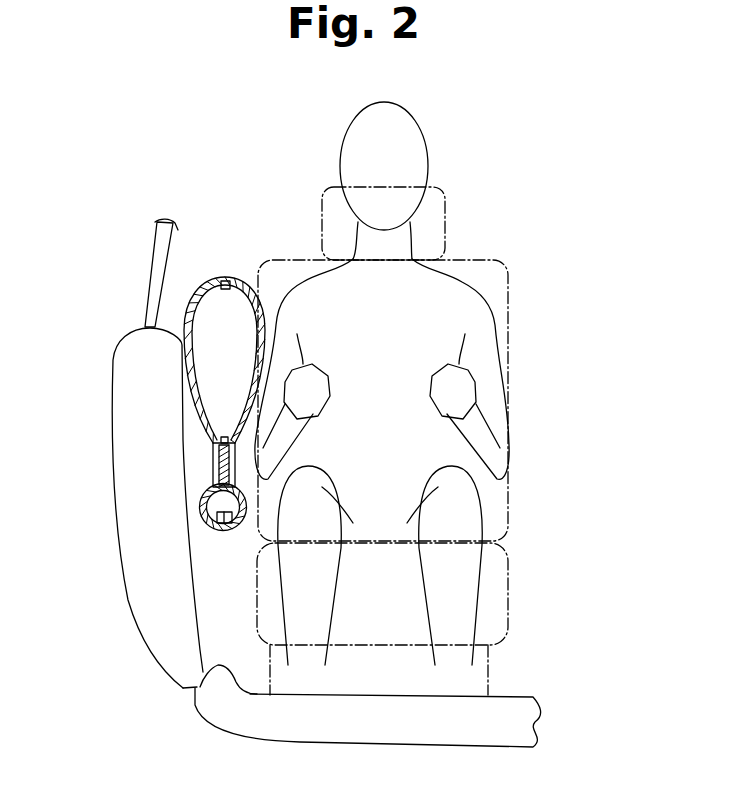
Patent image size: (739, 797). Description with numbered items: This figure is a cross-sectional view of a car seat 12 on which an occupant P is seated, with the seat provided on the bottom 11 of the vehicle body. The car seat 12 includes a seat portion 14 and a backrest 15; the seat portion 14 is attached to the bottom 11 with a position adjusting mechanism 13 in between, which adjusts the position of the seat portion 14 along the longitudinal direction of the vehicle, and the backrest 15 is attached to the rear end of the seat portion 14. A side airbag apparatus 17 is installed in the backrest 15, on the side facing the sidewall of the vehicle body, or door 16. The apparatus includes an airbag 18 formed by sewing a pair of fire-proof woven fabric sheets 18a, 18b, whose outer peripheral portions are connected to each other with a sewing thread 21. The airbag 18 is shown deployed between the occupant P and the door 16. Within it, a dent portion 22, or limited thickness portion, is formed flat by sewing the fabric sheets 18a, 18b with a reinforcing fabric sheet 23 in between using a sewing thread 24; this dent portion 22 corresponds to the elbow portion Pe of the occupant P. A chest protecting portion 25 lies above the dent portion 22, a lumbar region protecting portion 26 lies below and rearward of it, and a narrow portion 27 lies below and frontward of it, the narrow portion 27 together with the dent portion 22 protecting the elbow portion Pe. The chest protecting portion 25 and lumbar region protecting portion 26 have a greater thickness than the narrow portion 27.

The bottom 11 is at (368, 737).
The car seat 12 is at (520, 472).
The position adjusting mechanism 13 is at (490, 665).
The seat portion 14 is at (507, 590).
The backrest 15 is at (510, 513).
The door 16 is at (113, 370).
The side airbag apparatus 17 is at (240, 263).
The airbag 18 is at (249, 268).
The fabric sheet 18a is at (190, 306).
The fabric sheet 18b is at (263, 321).
The sewing thread 21 is at (222, 281).
The dent portion 22 is at (213, 466).
The reinforcing fabric sheet 23 is at (211, 477).
The sewing thread 24 is at (208, 441).
The chest protecting portion 25 is at (236, 360).
The lumbar region protecting portion 26 is at (188, 502).
The narrow portion 27 is at (180, 614).
The occupant P is at (437, 142).
The elbow portion Pe is at (285, 473).